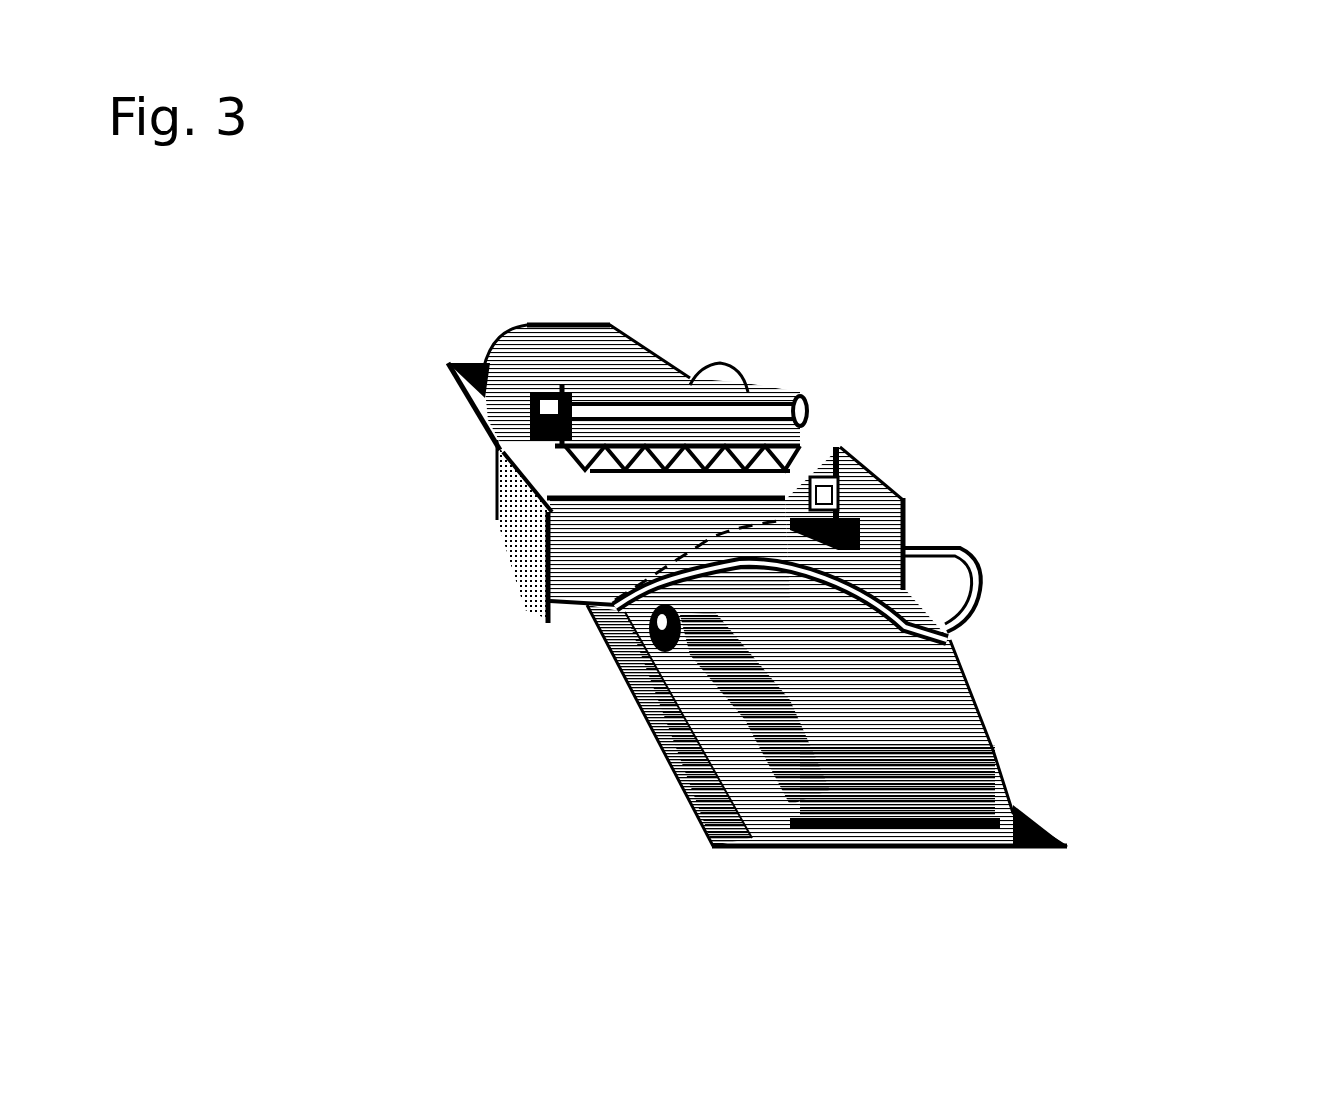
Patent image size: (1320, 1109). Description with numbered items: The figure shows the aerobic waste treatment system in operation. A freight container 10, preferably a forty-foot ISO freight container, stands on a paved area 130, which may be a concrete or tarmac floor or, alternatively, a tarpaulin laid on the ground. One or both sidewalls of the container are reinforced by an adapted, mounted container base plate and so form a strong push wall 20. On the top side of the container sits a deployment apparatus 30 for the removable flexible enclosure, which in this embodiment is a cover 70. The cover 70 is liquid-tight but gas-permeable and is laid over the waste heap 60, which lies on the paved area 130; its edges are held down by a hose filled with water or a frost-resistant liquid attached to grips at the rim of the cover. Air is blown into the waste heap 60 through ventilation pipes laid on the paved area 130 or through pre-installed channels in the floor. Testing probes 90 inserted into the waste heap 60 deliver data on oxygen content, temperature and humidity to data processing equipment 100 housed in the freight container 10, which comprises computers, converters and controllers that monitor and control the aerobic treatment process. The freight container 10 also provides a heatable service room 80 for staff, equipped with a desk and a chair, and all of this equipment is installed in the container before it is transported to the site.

The freight container 10 is at (935, 490).
The push wall 20 is at (595, 550).
The deployment apparatus 30 is at (496, 423).
The waste heap 60 is at (660, 808).
The cover 70 is at (572, 343).
The service room 80 is at (838, 425).
The testing probes 90 is at (680, 375).
The data processing equipment 100 is at (843, 495).
The paved area 130 is at (390, 608).